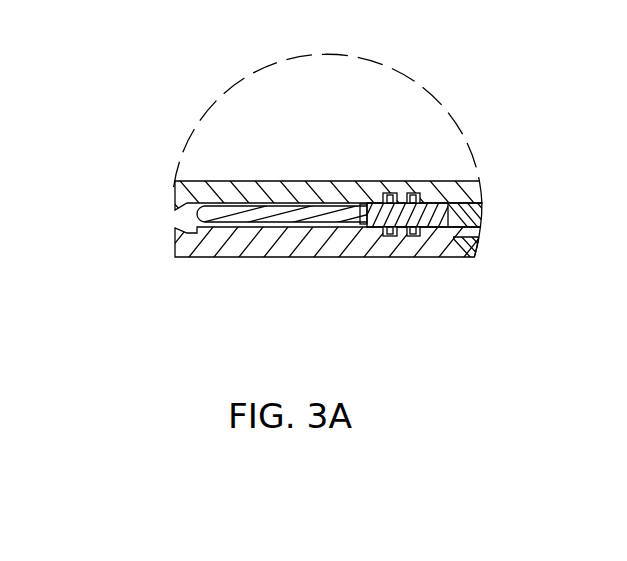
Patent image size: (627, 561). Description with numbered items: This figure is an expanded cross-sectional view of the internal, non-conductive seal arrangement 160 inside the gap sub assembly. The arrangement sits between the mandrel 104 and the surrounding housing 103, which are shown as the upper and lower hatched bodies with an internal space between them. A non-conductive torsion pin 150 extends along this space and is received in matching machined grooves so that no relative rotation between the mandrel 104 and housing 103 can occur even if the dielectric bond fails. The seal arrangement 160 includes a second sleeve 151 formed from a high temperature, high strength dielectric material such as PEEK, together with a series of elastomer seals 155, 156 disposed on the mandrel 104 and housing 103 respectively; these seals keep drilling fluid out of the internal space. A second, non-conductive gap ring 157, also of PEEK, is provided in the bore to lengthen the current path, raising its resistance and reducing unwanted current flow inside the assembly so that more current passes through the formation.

The housing 103 is at (293, 257).
The mandrel 104 is at (228, 181).
The torsion pins 150 is at (195, 213).
The second sleeve 151 is at (476, 256).
The elastomer seals 155 is at (391, 193).
The elastomer seals 156 is at (391, 236).
The second non-conductive gap ring 157 is at (463, 181).
The internal non-conductive seal arrangement 160 is at (311, 138).